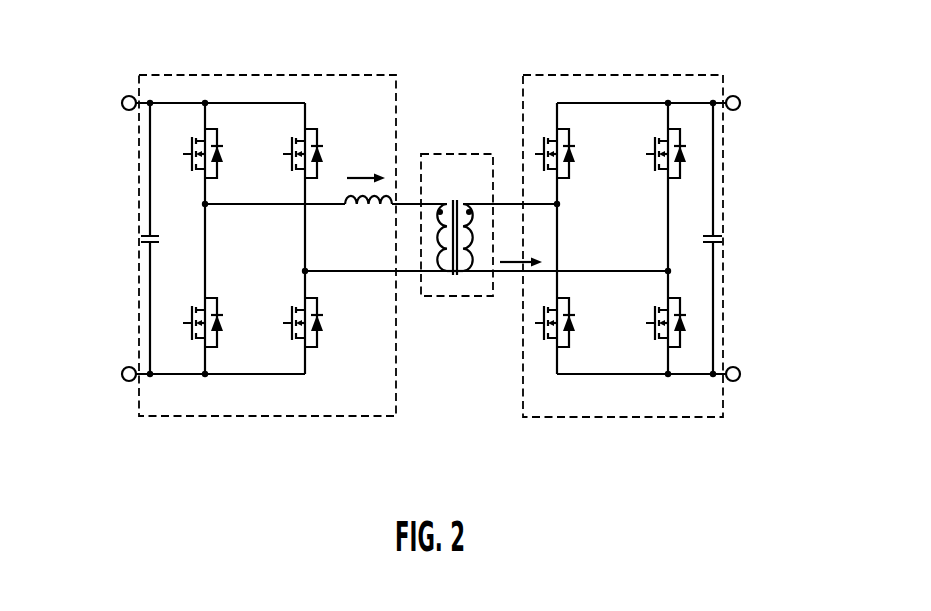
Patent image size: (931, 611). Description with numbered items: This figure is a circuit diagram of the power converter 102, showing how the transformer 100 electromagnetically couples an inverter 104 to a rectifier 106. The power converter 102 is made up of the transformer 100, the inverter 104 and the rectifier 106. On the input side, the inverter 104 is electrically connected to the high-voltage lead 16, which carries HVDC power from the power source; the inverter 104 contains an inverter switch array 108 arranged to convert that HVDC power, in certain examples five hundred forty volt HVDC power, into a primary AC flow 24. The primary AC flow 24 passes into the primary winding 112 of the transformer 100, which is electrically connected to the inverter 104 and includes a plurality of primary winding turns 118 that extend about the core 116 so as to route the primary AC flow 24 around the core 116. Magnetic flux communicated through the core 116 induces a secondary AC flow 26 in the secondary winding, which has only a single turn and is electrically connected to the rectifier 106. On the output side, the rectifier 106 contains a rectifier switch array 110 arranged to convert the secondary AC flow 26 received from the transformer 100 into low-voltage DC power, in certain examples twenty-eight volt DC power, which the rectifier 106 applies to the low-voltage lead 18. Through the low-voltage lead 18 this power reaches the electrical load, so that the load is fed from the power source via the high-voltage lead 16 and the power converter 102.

The high-voltage lead 16 is at (122, 106).
The low-voltage lead 18 is at (742, 105).
The primary AC flow 24 is at (356, 173).
The secondary AC flow 26 is at (515, 266).
The transformer 100 is at (453, 152).
The power converter 102 is at (152, 487).
The inverter 104 is at (235, 75).
The rectifier 106 is at (580, 75).
The inverter switch array 108 is at (245, 264).
The rectifier switch array 110 is at (603, 261).
The primary winding 112 is at (430, 203).
The core 116 is at (466, 273).
The primary winding turns 118 is at (442, 247).